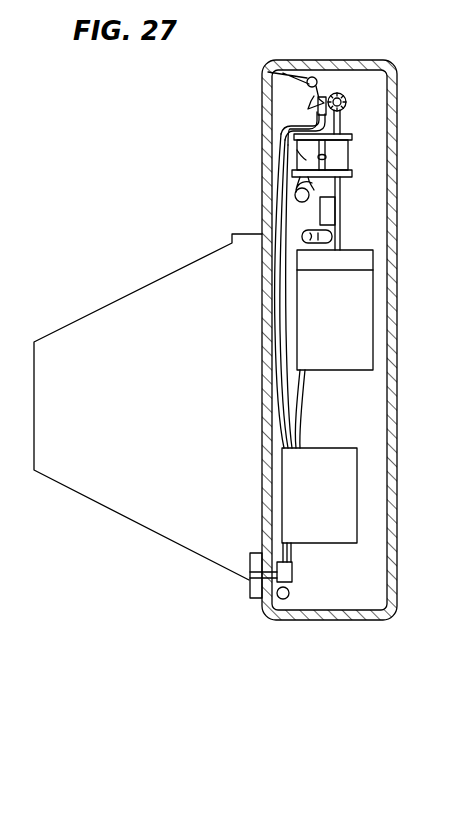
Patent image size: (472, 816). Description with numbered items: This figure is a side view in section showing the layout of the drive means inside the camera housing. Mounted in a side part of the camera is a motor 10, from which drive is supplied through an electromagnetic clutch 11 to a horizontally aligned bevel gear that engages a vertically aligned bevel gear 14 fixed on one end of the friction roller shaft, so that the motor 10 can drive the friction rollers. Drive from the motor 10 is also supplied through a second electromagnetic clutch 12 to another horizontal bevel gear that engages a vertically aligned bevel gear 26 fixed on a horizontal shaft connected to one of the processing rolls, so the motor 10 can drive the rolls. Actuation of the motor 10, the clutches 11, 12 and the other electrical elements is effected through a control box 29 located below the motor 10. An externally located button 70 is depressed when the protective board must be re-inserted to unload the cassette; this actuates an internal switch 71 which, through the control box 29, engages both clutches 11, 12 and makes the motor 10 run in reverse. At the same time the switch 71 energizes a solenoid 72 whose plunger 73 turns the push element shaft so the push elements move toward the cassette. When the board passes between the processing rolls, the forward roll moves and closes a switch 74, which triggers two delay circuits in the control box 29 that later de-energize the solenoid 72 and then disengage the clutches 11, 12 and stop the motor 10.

The motor 10 is at (353, 262).
The electromagnetic clutch 11 is at (305, 158).
The electromagnetic clutch 12 is at (342, 157).
The bevel gear 14 is at (296, 192).
The bevel gear 26 is at (350, 100).
The control box 29 is at (347, 492).
The button 70 is at (248, 582).
The switch 71 is at (292, 572).
The solenoid 72 is at (320, 207).
The plunger 73 is at (332, 236).
The switch 74 is at (325, 96).